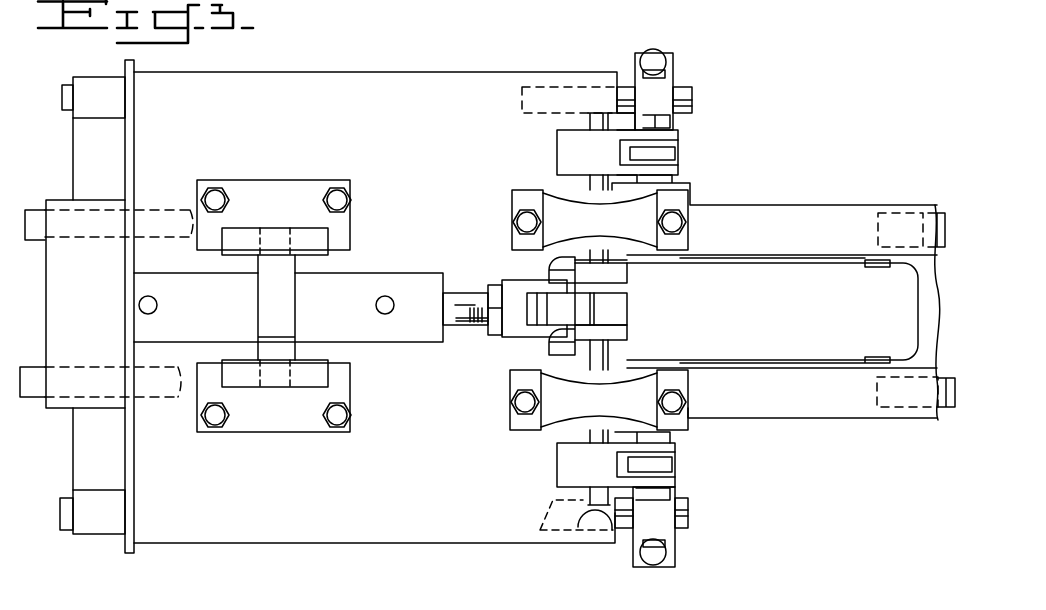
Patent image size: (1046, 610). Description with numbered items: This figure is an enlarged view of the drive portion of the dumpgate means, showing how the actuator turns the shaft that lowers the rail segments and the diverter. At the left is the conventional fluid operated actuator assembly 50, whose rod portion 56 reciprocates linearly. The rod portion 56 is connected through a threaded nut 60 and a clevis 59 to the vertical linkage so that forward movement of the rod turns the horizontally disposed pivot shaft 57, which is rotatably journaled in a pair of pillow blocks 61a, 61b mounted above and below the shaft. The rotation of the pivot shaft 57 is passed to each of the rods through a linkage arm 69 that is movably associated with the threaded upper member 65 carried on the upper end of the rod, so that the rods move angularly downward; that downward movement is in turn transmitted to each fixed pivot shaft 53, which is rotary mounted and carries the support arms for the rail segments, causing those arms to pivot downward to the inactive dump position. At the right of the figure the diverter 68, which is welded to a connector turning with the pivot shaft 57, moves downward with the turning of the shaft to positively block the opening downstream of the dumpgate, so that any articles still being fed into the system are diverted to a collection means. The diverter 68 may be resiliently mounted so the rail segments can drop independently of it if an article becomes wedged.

The fluid operated actuator assembly 50 is at (407, 343).
The fixed pivot shaft 53 is at (690, 91).
The rod portion 56 is at (455, 293).
The pivot shaft 57 is at (580, 431).
The clevis 59 is at (510, 287).
The threaded nut 60 is at (494, 336).
The pillow block 61a is at (540, 419).
The pillow block 61b is at (548, 203).
The threaded upper member 65 is at (680, 154).
The diverter 68 is at (803, 283).
The linkage arm 69 is at (570, 478).